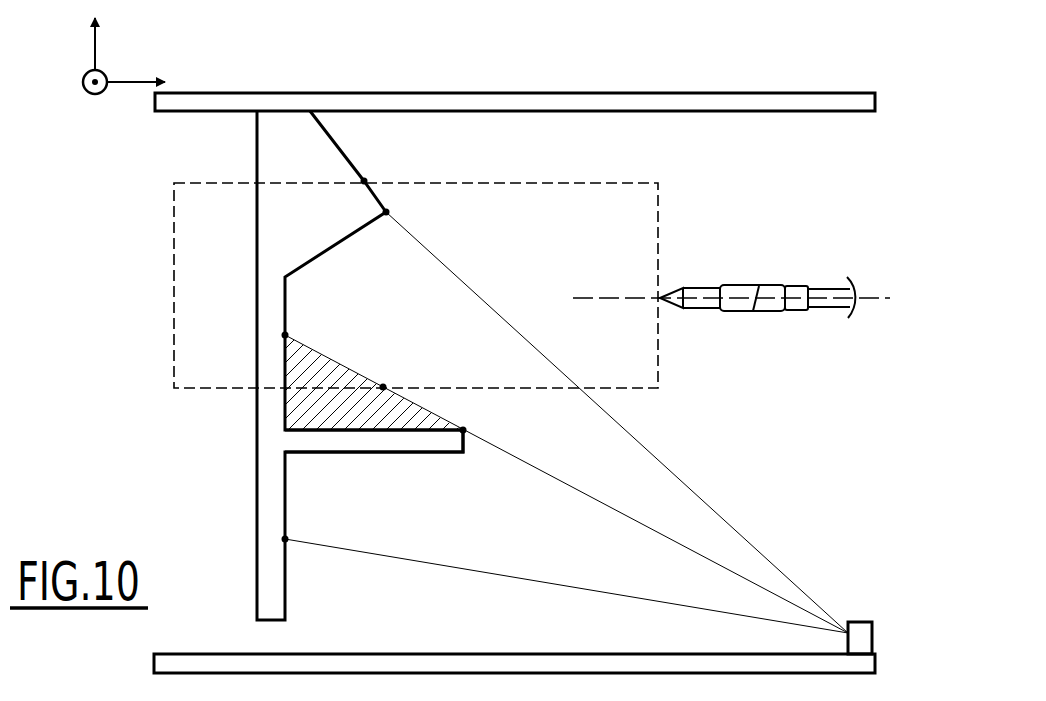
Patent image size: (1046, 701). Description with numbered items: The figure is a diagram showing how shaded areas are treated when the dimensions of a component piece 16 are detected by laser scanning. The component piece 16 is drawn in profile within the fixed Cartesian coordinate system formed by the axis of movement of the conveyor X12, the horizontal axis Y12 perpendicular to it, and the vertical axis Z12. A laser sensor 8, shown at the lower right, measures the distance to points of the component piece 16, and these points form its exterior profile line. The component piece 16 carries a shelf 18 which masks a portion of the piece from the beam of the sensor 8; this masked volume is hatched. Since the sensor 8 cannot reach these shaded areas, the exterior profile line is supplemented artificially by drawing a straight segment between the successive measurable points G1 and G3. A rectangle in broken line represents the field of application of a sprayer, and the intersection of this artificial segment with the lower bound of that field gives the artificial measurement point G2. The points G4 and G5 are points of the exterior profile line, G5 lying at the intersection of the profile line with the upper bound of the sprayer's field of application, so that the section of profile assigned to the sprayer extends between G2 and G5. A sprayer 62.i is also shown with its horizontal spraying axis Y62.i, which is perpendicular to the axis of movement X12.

The component piece 16 is at (268, 507).
The shelf 18 is at (372, 442).
The sensor 8 is at (862, 628).
The sprayer 62.i is at (740, 295).
The spraying axis Y62.i is at (745, 280).
The measurement point G1 is at (477, 416).
The artificial measurement point G2 is at (395, 372).
The measurement point G3 is at (302, 323).
The point of the exterior profile line G4 is at (381, 234).
The point of the exterior profile line G5 is at (378, 164).
The axis of movement of the conveyor X12 is at (99, 92).
The horizontal axis Y12 is at (151, 63).
The vertical axis Z12 is at (71, 37).